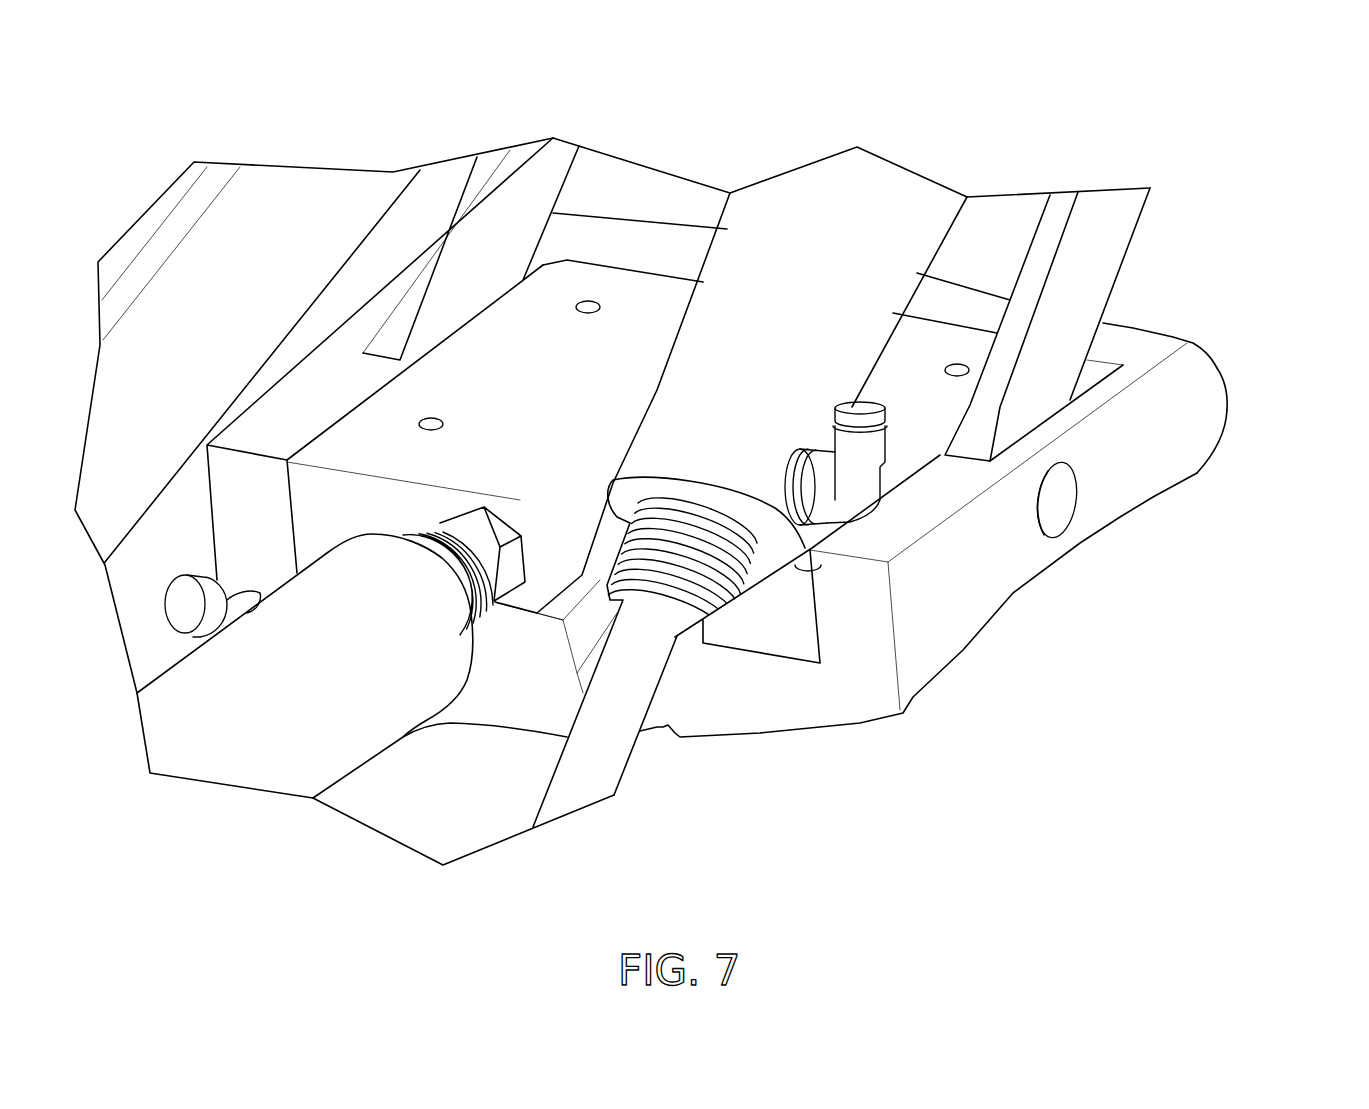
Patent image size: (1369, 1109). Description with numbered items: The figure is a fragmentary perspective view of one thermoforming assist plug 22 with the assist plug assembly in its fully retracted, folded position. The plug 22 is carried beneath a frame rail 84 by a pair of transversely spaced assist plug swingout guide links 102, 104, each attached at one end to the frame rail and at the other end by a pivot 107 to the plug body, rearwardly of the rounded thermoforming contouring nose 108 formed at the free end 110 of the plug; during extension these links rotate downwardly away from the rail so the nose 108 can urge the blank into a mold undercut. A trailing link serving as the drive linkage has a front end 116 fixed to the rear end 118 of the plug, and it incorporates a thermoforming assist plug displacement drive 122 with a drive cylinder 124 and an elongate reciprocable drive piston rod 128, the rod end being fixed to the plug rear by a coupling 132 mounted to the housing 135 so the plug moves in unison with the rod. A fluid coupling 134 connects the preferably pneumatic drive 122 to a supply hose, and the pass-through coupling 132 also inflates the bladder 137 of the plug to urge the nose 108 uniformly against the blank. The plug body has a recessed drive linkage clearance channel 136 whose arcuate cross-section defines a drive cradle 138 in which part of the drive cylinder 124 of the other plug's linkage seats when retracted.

The thermoforming assist plug 22 is at (1118, 645).
The frame rail 84 is at (265, 215).
The assist plug swingout guide link 102 is at (1095, 240).
The assist plug swingout guide link 104 is at (500, 217).
The pivot 107 is at (1050, 497).
The rounded thermoforming contouring nose 108 is at (1222, 348).
The free end 110 is at (1230, 385).
The front end 116 is at (463, 508).
The rear end 118 is at (524, 597).
The thermoforming assist plug displacement drive 122 is at (948, 223).
The drive cylinder 124 is at (833, 233).
The drive piston rod 128 is at (587, 768).
The coupling 132 is at (487, 523).
The fluid coupling 134 is at (880, 406).
The housing 135 is at (653, 293).
The recessed drive linkage clearance channel 136 is at (577, 695).
The bladder 137 is at (1230, 407).
The drive cradle 138 is at (874, 372).